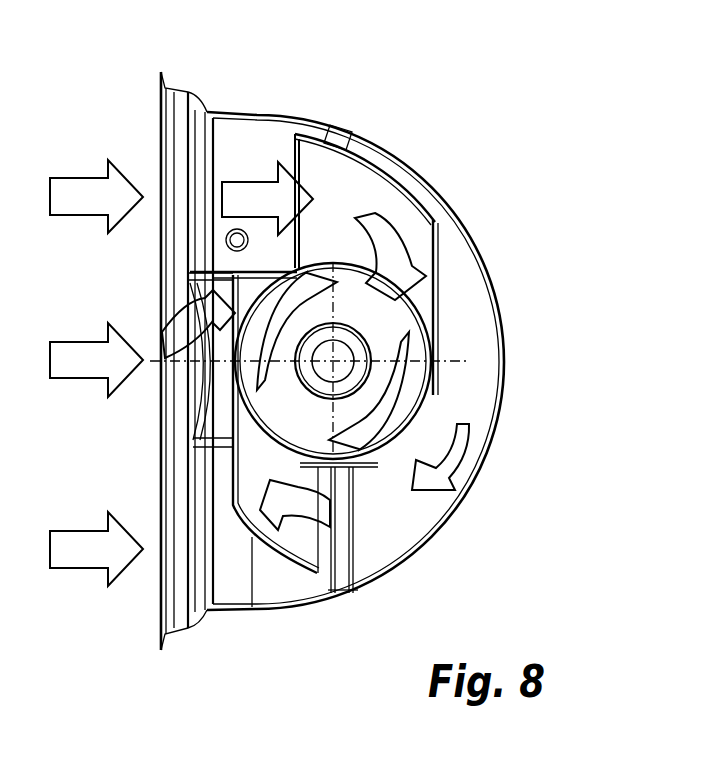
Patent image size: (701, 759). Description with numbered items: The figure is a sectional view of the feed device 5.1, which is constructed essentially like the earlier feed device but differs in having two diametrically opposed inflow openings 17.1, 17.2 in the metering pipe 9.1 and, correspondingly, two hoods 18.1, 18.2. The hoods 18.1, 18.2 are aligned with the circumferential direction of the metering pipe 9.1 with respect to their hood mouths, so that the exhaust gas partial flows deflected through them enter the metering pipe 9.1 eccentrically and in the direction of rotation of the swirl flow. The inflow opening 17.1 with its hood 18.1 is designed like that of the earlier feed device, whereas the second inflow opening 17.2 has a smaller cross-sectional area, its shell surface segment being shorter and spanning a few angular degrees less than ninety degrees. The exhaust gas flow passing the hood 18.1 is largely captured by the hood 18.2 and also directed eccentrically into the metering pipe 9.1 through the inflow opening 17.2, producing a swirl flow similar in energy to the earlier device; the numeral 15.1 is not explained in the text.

The feed device 5.1 is at (492, 206).
The metering pipe 9.1 is at (441, 396).
The inlet wall 15.1 is at (158, 135).
The inflow opening 17.1 is at (325, 256).
The second inflow opening 17.2 is at (263, 440).
The hood 18.1 is at (378, 155).
The hood 18.2 is at (262, 550).